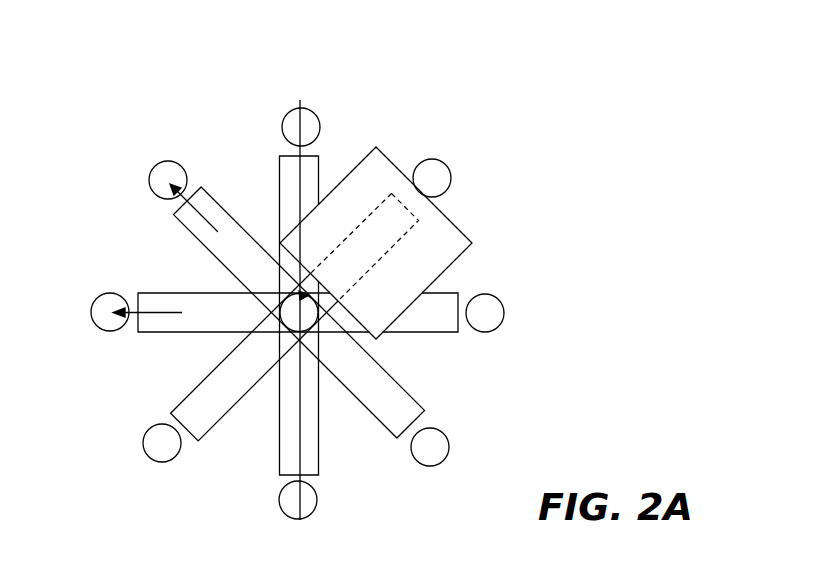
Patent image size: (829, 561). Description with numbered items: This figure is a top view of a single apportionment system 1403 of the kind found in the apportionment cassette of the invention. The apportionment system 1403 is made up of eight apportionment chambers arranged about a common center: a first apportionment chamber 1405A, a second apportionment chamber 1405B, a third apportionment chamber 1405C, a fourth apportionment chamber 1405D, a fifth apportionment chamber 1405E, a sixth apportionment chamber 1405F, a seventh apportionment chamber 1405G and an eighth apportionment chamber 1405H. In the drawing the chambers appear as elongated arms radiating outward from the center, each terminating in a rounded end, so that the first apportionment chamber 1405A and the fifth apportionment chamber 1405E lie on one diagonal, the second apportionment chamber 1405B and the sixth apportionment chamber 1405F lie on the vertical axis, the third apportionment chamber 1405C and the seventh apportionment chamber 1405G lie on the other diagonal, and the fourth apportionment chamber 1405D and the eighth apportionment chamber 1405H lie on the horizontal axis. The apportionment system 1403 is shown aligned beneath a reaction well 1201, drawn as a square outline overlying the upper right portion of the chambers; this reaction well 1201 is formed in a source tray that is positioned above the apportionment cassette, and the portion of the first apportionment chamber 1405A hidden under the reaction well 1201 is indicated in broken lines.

The reaction well 1201 is at (463, 232).
The apportionment system 1403 is at (548, 313).
The first apportionment chamber 1405A is at (388, 193).
The second apportionment chamber 1405B is at (321, 168).
The third apportionment chamber 1405C is at (211, 188).
The fourth apportionment chamber 1405D is at (155, 292).
The fifth apportionment chamber 1405E is at (215, 417).
The sixth apportionment chamber 1405F is at (320, 455).
The seventh apportionment chamber 1405G is at (414, 400).
The eighth apportionment chamber 1405H is at (448, 292).